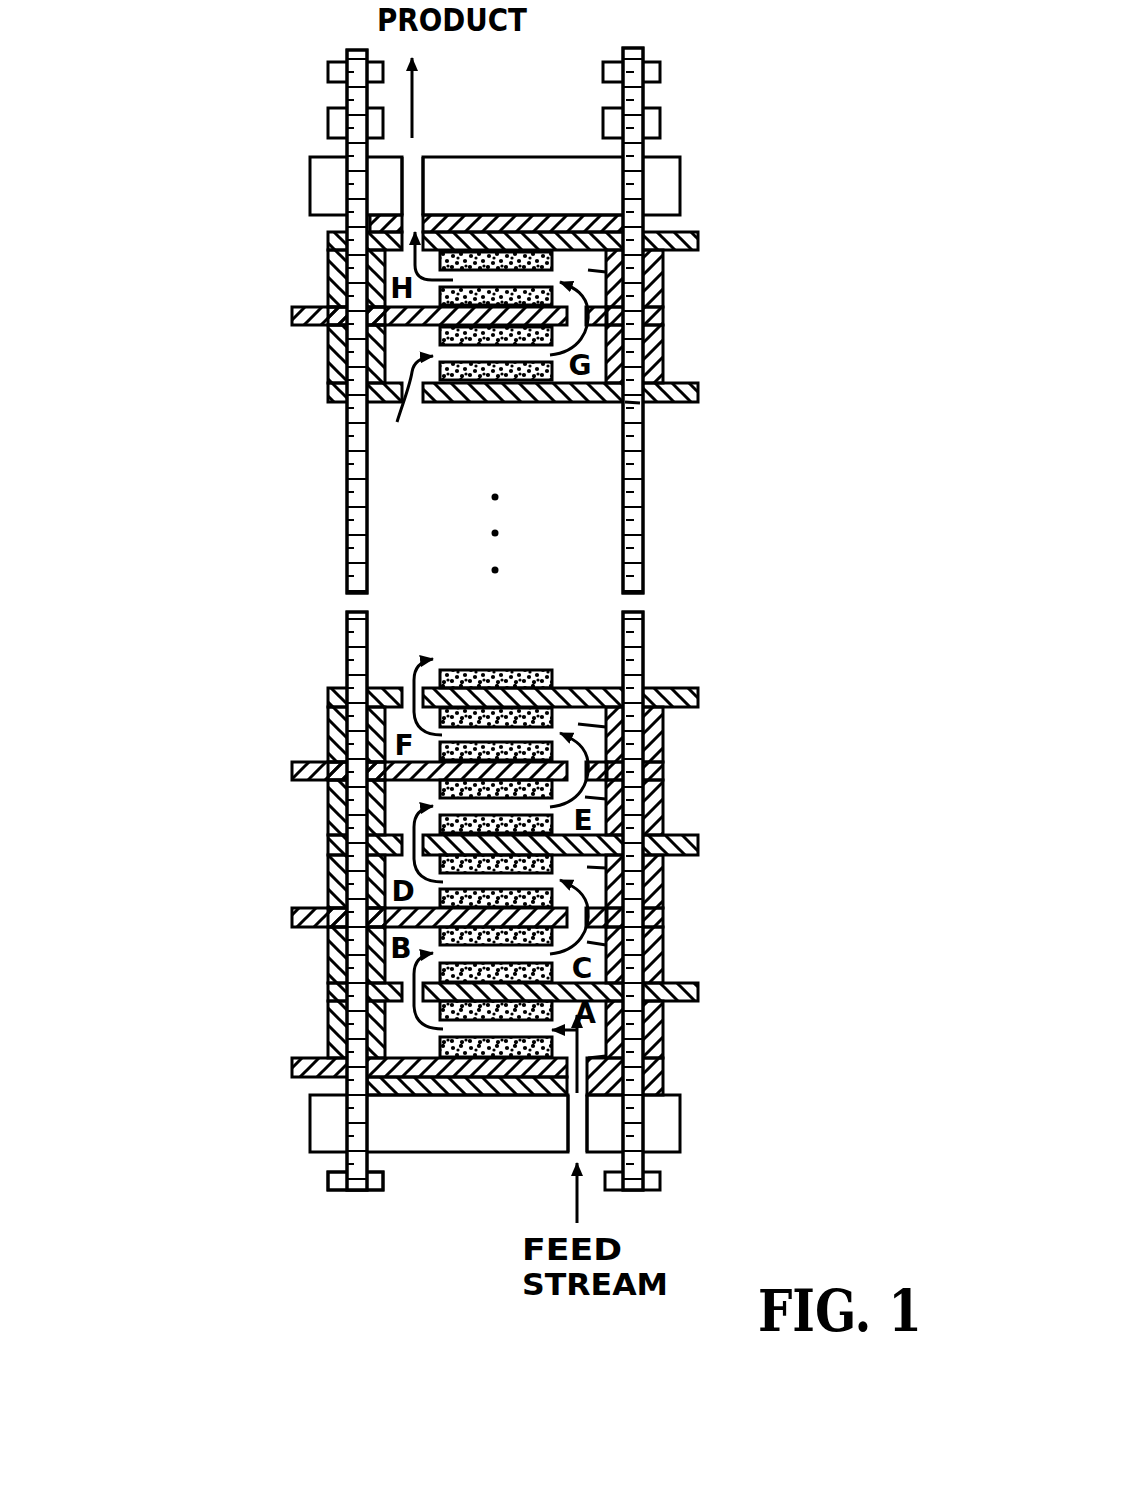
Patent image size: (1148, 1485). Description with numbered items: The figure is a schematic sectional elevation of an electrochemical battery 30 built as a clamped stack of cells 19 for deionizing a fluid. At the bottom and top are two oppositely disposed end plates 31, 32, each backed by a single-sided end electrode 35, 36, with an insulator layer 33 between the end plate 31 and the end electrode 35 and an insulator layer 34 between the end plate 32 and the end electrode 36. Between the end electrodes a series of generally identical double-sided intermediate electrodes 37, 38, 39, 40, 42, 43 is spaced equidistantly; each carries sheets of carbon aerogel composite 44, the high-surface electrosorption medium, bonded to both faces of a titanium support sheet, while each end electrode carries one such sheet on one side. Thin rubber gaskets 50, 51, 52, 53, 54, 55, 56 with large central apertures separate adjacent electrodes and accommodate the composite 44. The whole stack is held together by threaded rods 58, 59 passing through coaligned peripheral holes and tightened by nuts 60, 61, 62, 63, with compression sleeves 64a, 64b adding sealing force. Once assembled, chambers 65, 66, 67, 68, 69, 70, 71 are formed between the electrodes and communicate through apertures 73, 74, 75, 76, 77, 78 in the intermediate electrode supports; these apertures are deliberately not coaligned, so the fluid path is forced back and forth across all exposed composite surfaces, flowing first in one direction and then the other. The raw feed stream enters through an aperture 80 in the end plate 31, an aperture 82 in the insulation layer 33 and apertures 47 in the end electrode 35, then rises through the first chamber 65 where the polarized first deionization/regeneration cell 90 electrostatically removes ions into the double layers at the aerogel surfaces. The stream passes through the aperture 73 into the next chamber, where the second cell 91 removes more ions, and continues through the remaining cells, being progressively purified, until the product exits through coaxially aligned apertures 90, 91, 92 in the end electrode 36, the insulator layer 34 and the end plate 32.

The membrane stack assembly 19 is at (319, 955).
The electrochemical battery 30 is at (403, 1195).
The end plate 31 is at (320, 1128).
The end plate 32 is at (317, 163).
The insulator layer 33 is at (366, 1082).
The insulator layer 34 is at (370, 219).
The single-sided end electrode 35 is at (286, 1069).
The single-sided end electrode 36 is at (321, 241).
The double-sided intermediate electrode 37 is at (323, 991).
The double-sided intermediate electrode 38 is at (285, 918).
The double-sided intermediate electrode 39 is at (323, 846).
The double-sided intermediate electrode 40 is at (285, 771).
The double-sided intermediate electrode 42 is at (321, 392).
The double-sided intermediate electrode 43 is at (285, 315).
The carbon aerogel composite 44 is at (522, 260).
The apertures in end electrode 47 is at (323, 695).
The rubber gasket 50 is at (661, 1027).
The rubber gasket 51 is at (663, 965).
The rubber gasket 52 is at (663, 887).
The rubber gasket 53 is at (663, 822).
The rubber gasket 54 is at (663, 750).
The rubber gasket 55 is at (663, 371).
The rubber gasket 56 is at (663, 265).
The threaded rod 58 is at (647, 498).
The threaded rod 59 is at (345, 505).
The nut 60 is at (661, 1181).
The nut 61 is at (337, 1177).
The nut 62 is at (352, 72).
The nut 63 is at (646, 56).
The compression sleeve 64a is at (661, 119).
The compression sleeve 64b is at (328, 112).
The chamber 65 is at (588, 1058).
The chamber 66 is at (587, 942).
The chamber 67 is at (587, 867).
The chamber 68 is at (585, 797).
The chamber 69 is at (578, 724).
The chamber 70 is at (640, 403).
The chamber 71 is at (588, 270).
The aperture in intermediate electrode 73 is at (405, 1010).
The aperture in intermediate electrode 74 is at (587, 923).
The aperture in intermediate electrode 75 is at (405, 870).
The aperture in intermediate electrode 76 is at (586, 312).
The aperture in intermediate electrode 77 is at (407, 690).
The aperture in intermediate electrode 78 is at (397, 422).
The aperture in end plate 80 is at (575, 1147).
The aperture in insulation layer 82 is at (583, 1058).
The first deionization/regeneration cell; aperture in end electrode 90 is at (303, 1037).
The second deionization/regeneration cell; aperture in insulator layer 91 is at (425, 232).
The aperture in back plate 92 is at (413, 167).